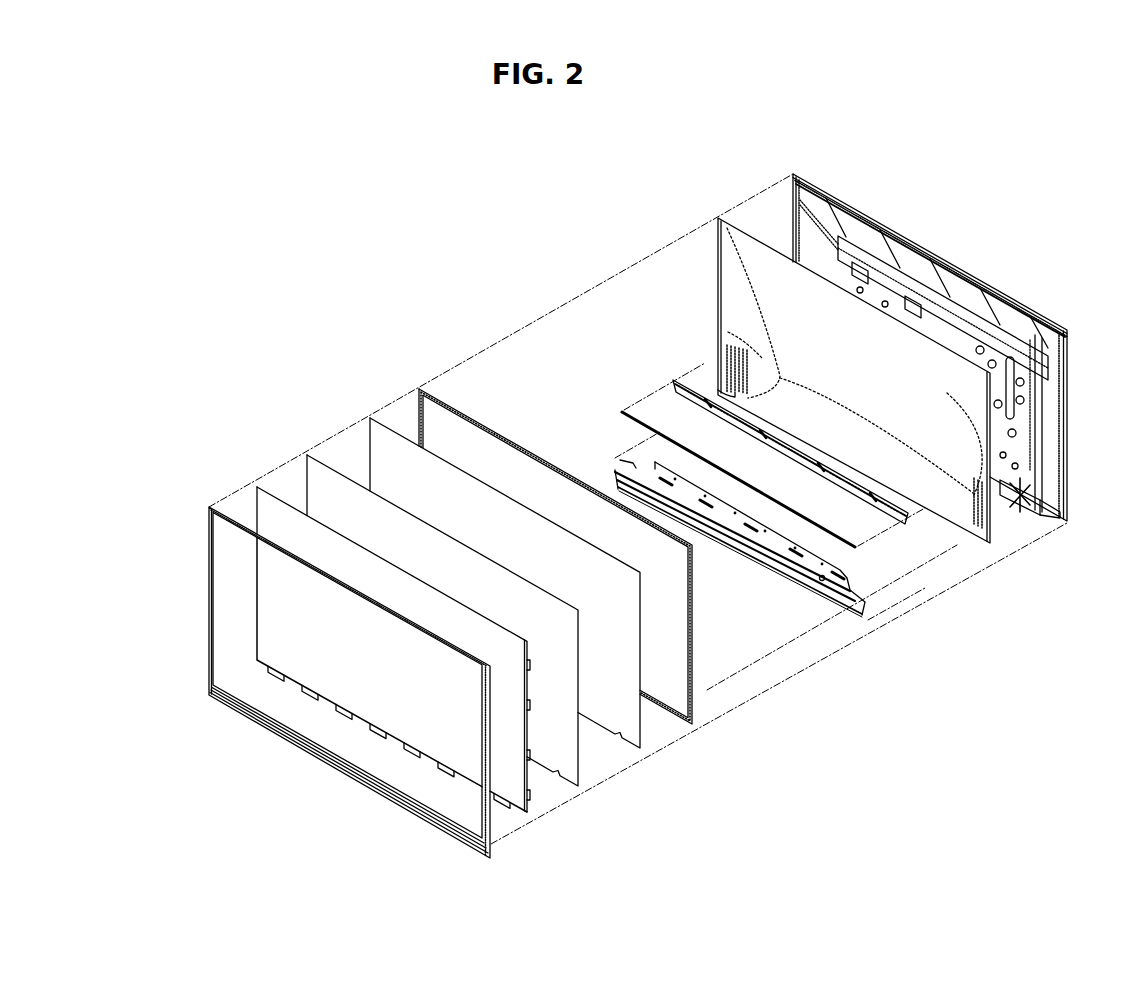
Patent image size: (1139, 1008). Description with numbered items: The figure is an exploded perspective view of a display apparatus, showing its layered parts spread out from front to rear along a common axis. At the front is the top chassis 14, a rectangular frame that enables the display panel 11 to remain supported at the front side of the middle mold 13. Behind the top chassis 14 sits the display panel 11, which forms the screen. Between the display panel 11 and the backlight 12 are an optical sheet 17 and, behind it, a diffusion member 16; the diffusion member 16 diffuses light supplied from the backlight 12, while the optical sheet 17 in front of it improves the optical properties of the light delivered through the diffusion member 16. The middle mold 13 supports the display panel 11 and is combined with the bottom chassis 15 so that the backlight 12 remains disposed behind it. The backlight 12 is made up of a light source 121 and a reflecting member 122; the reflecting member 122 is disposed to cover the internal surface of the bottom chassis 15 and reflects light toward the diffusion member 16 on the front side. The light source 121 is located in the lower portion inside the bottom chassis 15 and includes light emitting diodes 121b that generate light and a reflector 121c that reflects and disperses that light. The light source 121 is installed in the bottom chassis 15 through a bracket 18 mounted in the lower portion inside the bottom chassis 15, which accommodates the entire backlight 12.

The display panel 11 is at (528, 807).
The backlight 12 is at (937, 588).
The light source 121 is at (637, 373).
The light emitting diodes 121b is at (622, 416).
The reflector 121c is at (685, 367).
The reflecting member 122 is at (715, 237).
The middle mold 13 is at (695, 707).
The top chassis 14 is at (492, 847).
The bottom chassis 15 is at (1070, 507).
The diffusion member 16 is at (643, 742).
The optical sheet 17 is at (583, 772).
The bracket 18 is at (810, 588).